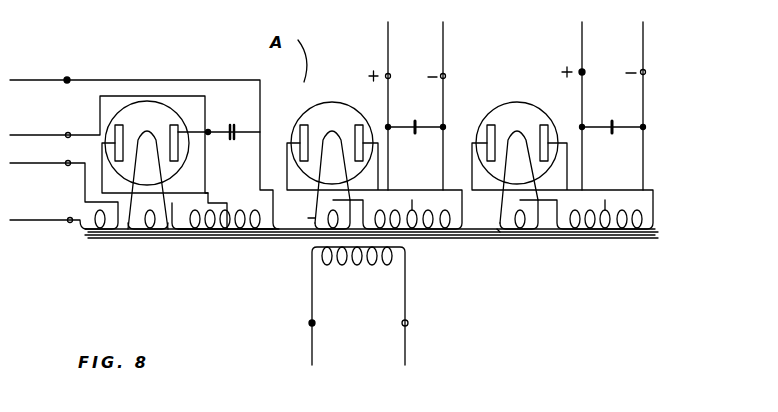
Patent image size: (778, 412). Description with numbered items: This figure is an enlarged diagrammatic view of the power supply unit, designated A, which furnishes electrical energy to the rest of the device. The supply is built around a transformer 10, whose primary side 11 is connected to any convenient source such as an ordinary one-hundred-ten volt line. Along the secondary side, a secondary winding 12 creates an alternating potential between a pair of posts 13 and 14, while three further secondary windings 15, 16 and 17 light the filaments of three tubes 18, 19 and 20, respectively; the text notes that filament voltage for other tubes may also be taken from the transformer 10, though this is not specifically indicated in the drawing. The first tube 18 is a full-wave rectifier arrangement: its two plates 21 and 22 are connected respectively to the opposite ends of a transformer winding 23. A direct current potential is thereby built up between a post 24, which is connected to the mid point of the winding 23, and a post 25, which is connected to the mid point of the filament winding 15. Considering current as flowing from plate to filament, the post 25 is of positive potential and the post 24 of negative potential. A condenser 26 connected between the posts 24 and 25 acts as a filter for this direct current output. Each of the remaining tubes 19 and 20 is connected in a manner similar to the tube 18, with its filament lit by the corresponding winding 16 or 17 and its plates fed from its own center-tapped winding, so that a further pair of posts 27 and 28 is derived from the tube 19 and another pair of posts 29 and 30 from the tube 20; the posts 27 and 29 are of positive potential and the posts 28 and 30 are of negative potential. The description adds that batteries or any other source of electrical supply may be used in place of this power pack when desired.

The transformer 10 is at (645, 238).
The primary side 11 is at (390, 262).
The secondary winding 12 is at (83, 232).
The post 13 is at (68, 163).
The post 14 is at (70, 220).
The secondary winding 15 is at (150, 220).
The secondary winding 16 is at (299, 218).
The secondary winding 17 is at (499, 233).
The tube 18 is at (160, 139).
The tube 19 is at (338, 96).
The tube 20 is at (522, 102).
The plate 21 is at (112, 130).
The plate 22 is at (178, 130).
The transformer winding 23 is at (222, 236).
The post 24 is at (67, 80).
The post 25 is at (68, 135).
The condenser 26 is at (234, 139).
The post 27 is at (388, 76).
The post 28 is at (443, 76).
The post 29 is at (582, 72).
The post 30 is at (643, 72).